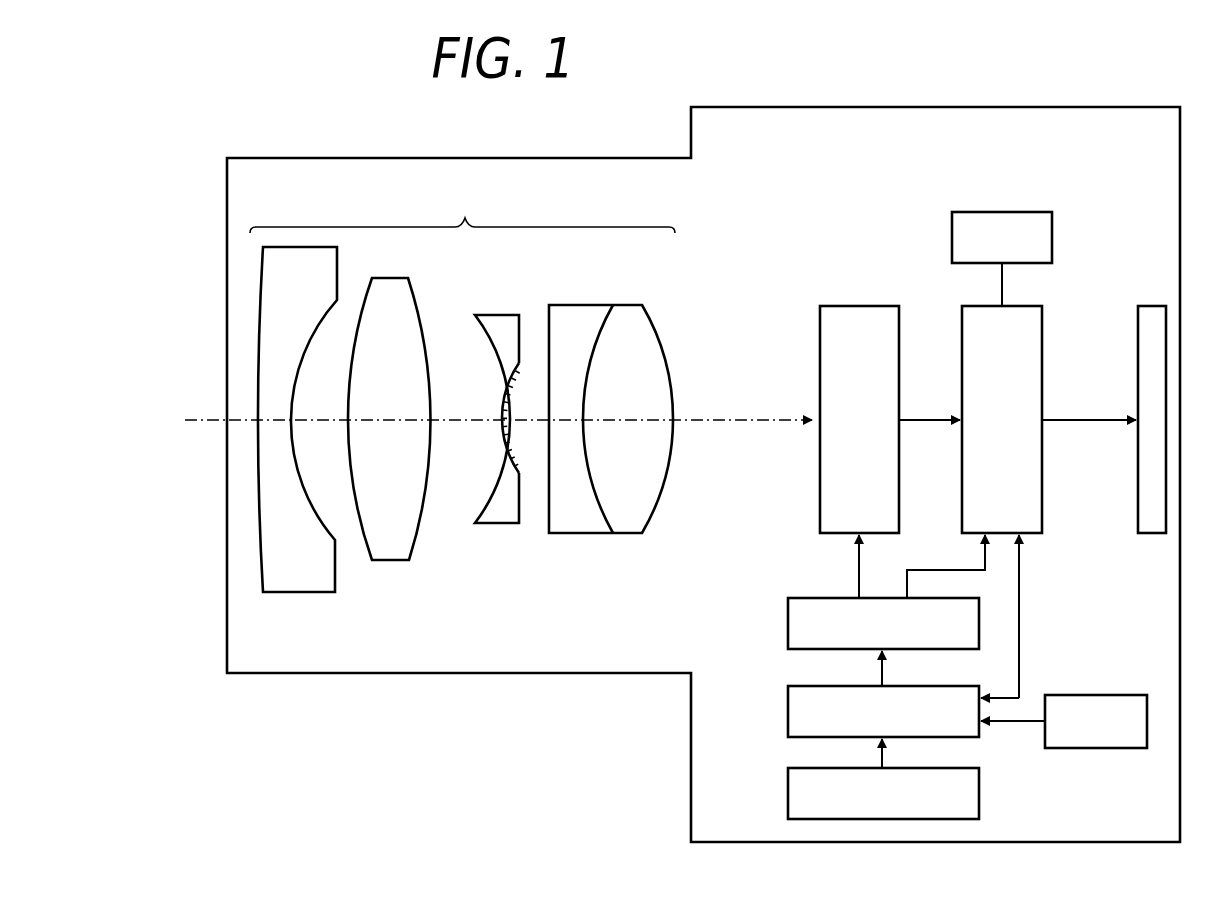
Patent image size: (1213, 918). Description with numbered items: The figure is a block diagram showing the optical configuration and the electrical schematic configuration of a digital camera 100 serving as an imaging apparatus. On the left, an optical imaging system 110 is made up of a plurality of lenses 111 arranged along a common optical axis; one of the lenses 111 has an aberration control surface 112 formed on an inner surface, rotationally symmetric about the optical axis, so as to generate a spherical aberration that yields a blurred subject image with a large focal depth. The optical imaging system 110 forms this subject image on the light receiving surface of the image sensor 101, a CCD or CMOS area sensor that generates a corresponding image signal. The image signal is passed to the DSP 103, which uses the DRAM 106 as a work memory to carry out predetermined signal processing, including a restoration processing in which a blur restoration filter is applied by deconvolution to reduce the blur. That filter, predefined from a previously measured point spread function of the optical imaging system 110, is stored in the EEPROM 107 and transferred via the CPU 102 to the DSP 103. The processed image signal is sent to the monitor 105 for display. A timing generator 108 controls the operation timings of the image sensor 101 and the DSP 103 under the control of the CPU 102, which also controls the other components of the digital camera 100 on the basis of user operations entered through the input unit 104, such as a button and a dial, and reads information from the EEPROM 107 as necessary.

The digital camera 100 is at (589, 775).
The image sensor 101 is at (859, 306).
The CPU 102 is at (788, 722).
The DSP 103 is at (1043, 318).
The input unit 104 is at (979, 793).
The monitor 105 is at (1148, 306).
The DRAM 106 is at (1003, 212).
The EEPROM 107 is at (1093, 695).
The timing generator 108 is at (810, 598).
The optical imaging system 110 is at (462, 419).
The lens 111 is at (465, 452).
The aberration control surface 112 is at (513, 383).